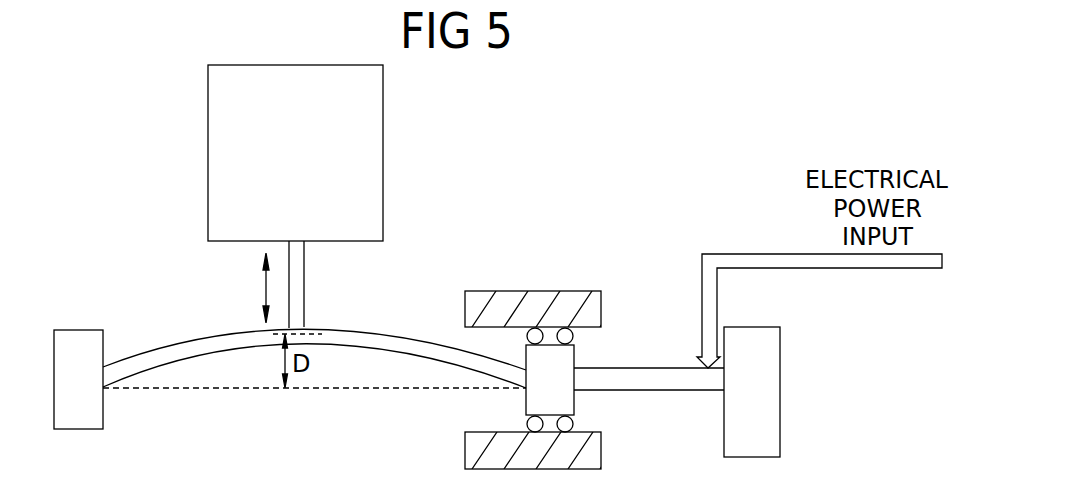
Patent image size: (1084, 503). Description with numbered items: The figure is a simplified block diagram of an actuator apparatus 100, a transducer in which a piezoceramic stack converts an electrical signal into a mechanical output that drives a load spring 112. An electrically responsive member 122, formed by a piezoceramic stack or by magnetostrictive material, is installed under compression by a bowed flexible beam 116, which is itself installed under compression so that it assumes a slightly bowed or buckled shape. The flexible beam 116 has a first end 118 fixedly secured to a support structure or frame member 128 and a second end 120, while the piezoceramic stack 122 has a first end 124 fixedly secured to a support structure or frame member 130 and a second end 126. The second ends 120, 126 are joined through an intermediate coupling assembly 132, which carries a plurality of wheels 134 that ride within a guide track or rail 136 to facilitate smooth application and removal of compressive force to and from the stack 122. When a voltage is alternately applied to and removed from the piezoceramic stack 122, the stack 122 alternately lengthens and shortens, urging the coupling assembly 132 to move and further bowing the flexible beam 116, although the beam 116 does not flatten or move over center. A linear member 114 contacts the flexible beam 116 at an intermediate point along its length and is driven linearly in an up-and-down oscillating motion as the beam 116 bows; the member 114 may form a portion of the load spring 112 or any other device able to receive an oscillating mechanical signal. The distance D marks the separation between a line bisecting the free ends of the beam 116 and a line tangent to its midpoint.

The actuator apparatus 100 is at (703, 218).
The load spring 112 is at (365, 130).
The linear member 114 is at (290, 271).
The flexible beam 116 is at (175, 322).
The first end of flexible beam 118 is at (117, 370).
The second end of flexible beam 120 is at (495, 368).
The electrically responsive member 122 is at (646, 362).
The first end of piezoceramic stack 124 is at (707, 389).
The second end of piezoceramic stack 126 is at (612, 383).
The support structure or frame member 128 is at (72, 408).
The support structure or frame member 130 is at (740, 327).
The coupling assembly 132 is at (582, 349).
The wheels 134 is at (527, 336).
The guide track or rail 136 is at (477, 447).